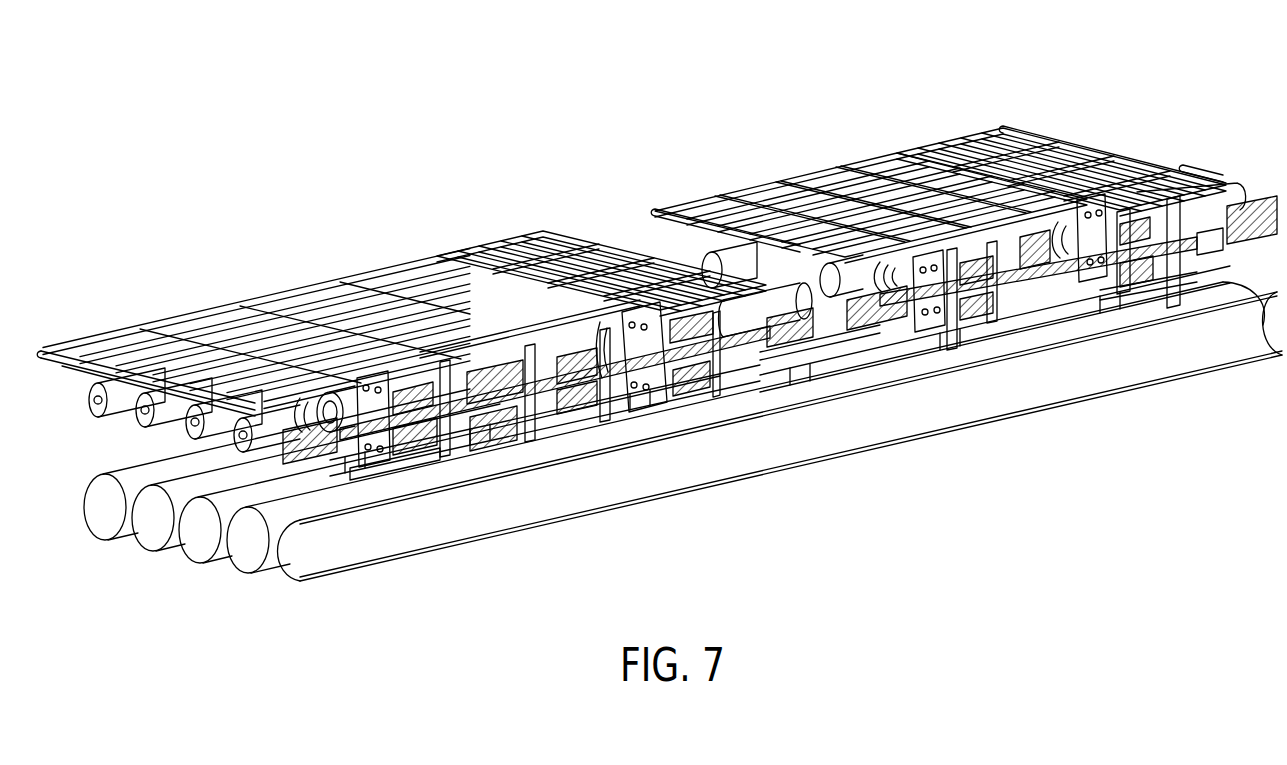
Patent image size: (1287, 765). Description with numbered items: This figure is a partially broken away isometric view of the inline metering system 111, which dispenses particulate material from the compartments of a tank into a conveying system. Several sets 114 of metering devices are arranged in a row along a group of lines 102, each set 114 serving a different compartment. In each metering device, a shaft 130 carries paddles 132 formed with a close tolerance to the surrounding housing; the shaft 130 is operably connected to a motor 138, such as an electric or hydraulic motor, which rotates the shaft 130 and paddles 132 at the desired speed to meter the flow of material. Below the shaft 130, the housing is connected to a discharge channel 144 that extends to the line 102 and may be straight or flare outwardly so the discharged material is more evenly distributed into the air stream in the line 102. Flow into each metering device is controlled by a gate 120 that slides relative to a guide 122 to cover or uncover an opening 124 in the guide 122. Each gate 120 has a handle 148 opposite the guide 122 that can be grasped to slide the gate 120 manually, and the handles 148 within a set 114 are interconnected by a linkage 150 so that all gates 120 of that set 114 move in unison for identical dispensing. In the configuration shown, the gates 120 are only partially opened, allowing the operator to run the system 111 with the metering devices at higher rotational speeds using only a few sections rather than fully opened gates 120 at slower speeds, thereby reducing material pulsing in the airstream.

The line 102 is at (305, 563).
The inline metering system 111 is at (320, 240).
The set of metering devices 114 is at (218, 284).
The gate 120 is at (300, 390).
The guide 122 is at (530, 345).
The opening 124 is at (587, 340).
The shaft 130 is at (545, 400).
The paddle 132 is at (497, 398).
The motor 138 is at (335, 448).
The discharge channel 144 is at (405, 422).
The handle 148 is at (40, 350).
The linkage 150 is at (70, 366).